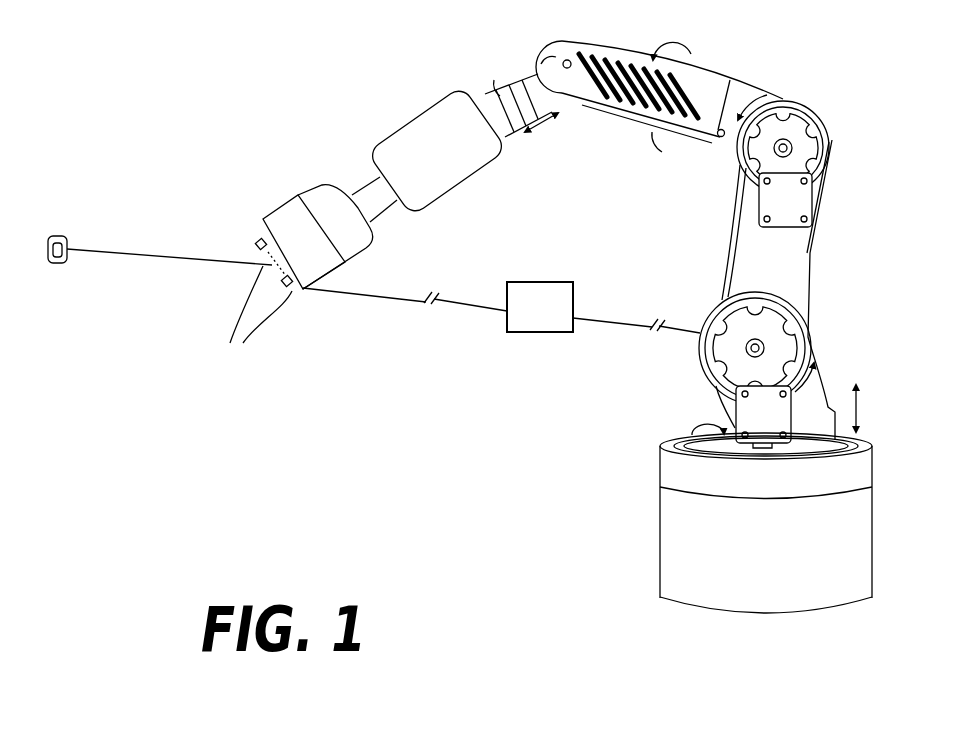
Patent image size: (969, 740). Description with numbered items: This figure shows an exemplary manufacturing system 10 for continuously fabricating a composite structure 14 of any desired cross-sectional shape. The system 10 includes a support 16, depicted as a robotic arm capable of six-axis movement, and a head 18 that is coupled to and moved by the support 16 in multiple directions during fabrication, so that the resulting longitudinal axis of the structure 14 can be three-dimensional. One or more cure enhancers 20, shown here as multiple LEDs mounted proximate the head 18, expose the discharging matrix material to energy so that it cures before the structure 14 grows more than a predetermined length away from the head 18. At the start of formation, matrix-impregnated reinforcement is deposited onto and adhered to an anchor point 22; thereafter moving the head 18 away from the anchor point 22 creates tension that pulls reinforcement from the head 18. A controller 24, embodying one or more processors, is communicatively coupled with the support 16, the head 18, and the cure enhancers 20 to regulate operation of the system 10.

The system 10 is at (134, 56).
The composite structure 14 is at (178, 258).
The support 16 is at (787, 258).
The head 18 is at (355, 245).
The cure enhancer 20 is at (259, 308).
The anchor point 22 is at (64, 277).
The controller 24 is at (549, 318).